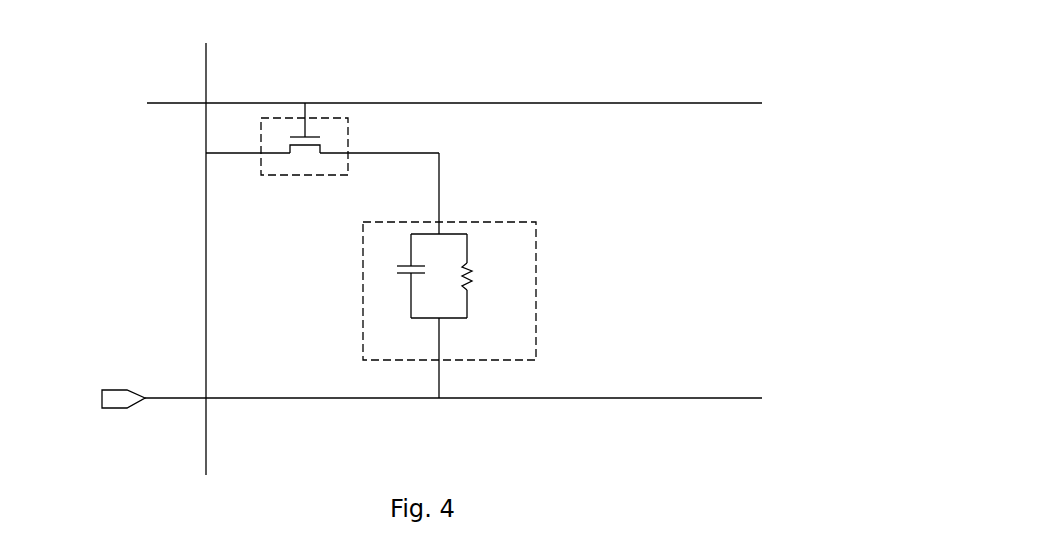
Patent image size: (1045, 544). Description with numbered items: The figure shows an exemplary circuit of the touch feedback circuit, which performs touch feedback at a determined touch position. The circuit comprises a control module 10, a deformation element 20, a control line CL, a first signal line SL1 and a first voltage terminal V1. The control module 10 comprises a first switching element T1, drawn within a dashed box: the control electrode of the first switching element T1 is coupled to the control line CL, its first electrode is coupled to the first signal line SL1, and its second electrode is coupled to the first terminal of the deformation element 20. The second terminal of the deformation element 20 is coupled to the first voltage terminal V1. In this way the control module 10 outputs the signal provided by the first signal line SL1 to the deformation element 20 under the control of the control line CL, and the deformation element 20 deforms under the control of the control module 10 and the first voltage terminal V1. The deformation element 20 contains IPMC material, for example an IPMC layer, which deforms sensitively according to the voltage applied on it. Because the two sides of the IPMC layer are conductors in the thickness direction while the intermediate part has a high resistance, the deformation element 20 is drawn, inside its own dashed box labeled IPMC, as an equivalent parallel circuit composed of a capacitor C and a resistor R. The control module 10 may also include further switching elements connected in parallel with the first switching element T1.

The control module 10 is at (291, 174).
The deformation element 20 is at (459, 262).
The first switching element T1 is at (318, 128).
The capacitor C is at (399, 276).
The resistor R is at (479, 276).
The ionic polymer metal composite IPMC is at (464, 289).
The first signal line SL1 is at (208, 247).
The control line CL is at (439, 103).
The first voltage terminal V1 is at (429, 386).